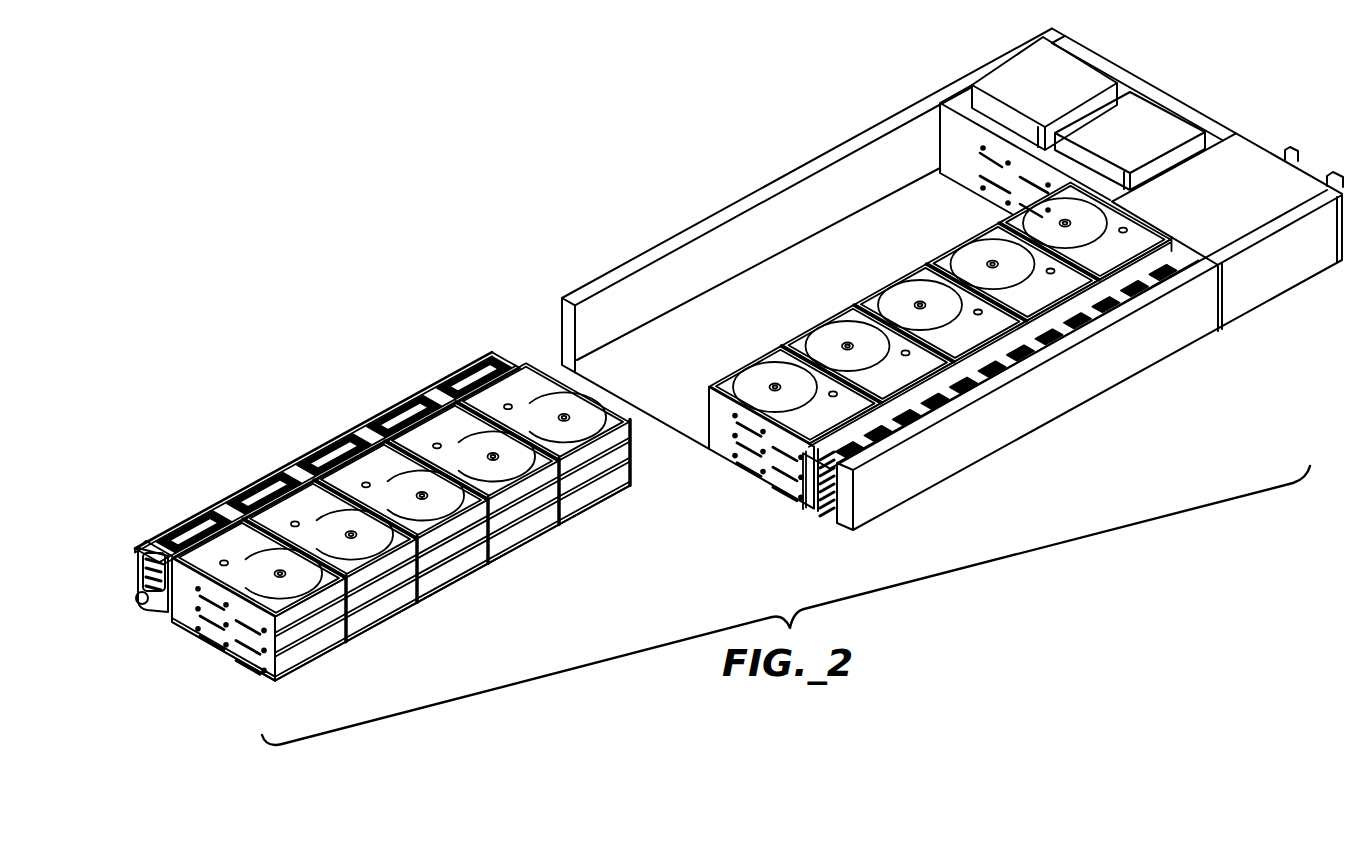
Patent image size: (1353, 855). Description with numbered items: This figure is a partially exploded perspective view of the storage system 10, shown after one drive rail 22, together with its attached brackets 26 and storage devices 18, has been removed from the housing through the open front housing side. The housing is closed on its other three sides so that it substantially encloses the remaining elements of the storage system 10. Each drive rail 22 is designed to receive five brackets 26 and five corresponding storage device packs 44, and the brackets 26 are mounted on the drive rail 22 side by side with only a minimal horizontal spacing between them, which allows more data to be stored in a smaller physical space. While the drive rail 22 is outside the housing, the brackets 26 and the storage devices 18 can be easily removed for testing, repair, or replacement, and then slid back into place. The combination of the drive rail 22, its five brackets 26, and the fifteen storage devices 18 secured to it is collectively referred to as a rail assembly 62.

The storage system 10 is at (655, 163).
The storage device 18 is at (297, 597).
The drive rail 22 is at (152, 528).
The bracket 26 is at (230, 522).
The storage device pack 44 is at (382, 617).
The rail assembly 62 is at (400, 333).